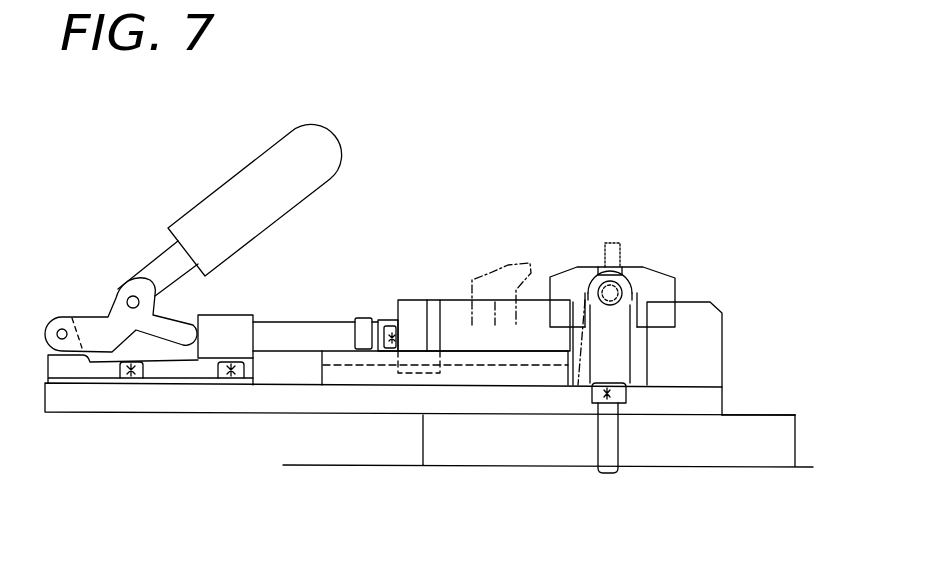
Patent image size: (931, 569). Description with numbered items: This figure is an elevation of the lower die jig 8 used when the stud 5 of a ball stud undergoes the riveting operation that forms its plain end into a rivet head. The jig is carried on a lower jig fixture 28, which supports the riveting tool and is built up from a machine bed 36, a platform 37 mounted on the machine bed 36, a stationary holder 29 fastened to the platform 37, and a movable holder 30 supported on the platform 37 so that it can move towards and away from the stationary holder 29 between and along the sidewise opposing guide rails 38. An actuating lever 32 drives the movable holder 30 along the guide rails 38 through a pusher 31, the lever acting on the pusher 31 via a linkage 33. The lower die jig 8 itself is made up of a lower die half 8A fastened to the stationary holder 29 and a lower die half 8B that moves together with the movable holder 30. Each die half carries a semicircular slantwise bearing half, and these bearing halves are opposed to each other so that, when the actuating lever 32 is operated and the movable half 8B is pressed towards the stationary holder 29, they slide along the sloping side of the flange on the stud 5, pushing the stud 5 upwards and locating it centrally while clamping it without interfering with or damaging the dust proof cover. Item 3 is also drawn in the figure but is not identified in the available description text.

The clamp pin 3 is at (595, 308).
The stud 5 is at (605, 248).
The lower die jig 8 is at (618, 246).
The lower die half 8A is at (653, 285).
The lower die half 8B is at (568, 285).
The lower jig fixture 28 is at (702, 287).
The stationary holder 29 is at (703, 327).
The movable holder 30 is at (460, 317).
The pusher 31 is at (305, 332).
The actuating lever 32 is at (248, 183).
The linkage 33 is at (118, 318).
The machine bed 36 is at (675, 440).
The platform 37 is at (650, 407).
The guide rails 38 is at (483, 378).